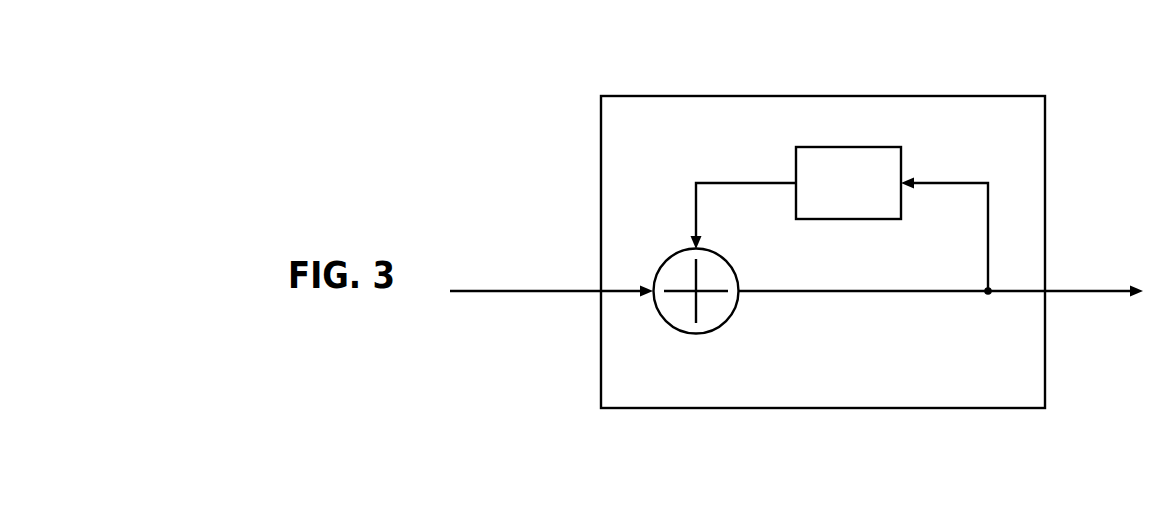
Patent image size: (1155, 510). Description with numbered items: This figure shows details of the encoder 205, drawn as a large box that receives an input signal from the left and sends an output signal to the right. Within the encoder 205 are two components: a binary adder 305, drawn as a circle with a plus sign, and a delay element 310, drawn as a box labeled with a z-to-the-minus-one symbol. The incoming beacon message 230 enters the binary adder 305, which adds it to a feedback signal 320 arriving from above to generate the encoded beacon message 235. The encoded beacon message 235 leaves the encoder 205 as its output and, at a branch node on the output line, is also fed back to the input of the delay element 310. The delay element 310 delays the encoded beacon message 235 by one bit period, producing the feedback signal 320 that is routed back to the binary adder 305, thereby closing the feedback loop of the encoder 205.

The encoder 205 is at (821, 96).
The beacon message 230 is at (529, 291).
The binary adder 305 is at (697, 334).
The delay element 310 is at (848, 147).
The feedback signal 320 is at (748, 183).
The encoded beacon message 235 is at (988, 297).